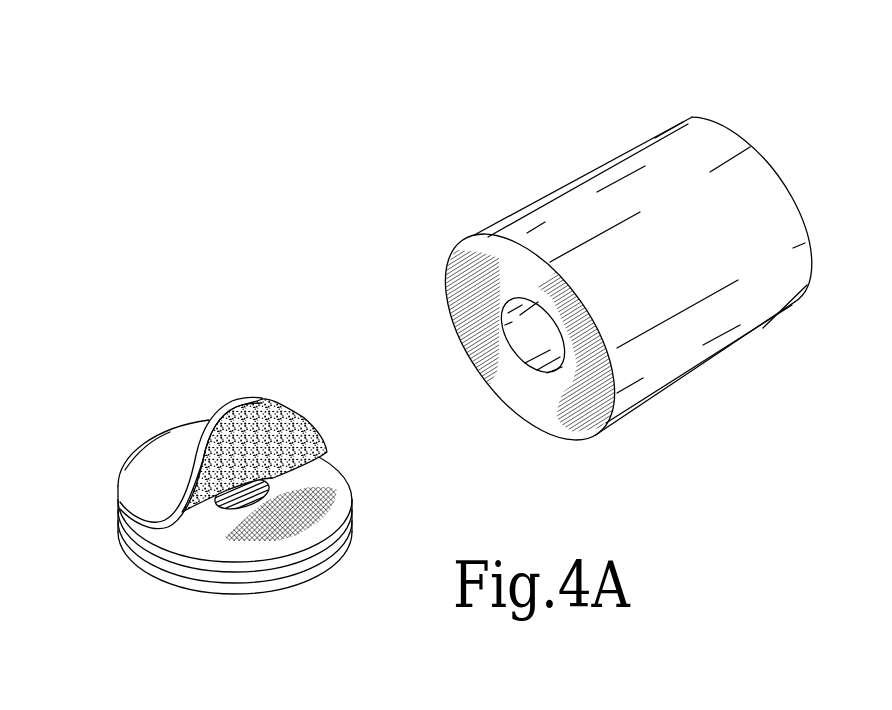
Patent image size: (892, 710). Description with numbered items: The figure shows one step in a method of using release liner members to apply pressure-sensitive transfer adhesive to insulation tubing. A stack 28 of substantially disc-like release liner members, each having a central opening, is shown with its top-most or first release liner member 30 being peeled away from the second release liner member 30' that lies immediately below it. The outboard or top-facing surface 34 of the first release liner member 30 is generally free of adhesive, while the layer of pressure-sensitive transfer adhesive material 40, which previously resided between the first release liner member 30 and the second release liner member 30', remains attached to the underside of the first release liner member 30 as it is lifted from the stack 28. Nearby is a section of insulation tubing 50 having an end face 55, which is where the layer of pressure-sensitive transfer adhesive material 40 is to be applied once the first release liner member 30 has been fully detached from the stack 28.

The stack 28 is at (145, 598).
The first release liner member 30 is at (222, 395).
The second release liner member 30' is at (298, 505).
The outboard surface 34 is at (144, 472).
The layer of pressure-sensitive transfer adhesive material 40 is at (266, 423).
The section of insulation tubing 50 is at (594, 154).
The end face 55 is at (478, 242).